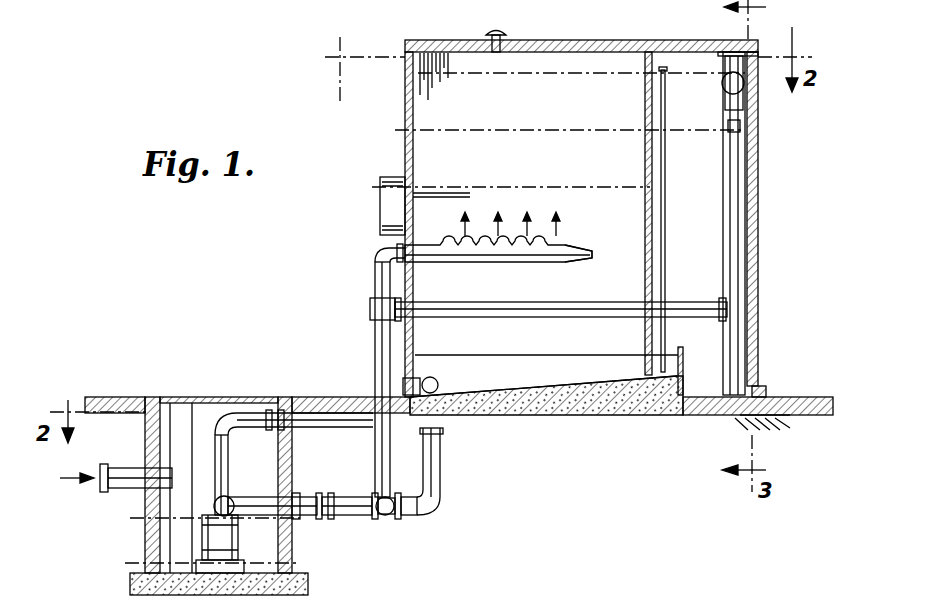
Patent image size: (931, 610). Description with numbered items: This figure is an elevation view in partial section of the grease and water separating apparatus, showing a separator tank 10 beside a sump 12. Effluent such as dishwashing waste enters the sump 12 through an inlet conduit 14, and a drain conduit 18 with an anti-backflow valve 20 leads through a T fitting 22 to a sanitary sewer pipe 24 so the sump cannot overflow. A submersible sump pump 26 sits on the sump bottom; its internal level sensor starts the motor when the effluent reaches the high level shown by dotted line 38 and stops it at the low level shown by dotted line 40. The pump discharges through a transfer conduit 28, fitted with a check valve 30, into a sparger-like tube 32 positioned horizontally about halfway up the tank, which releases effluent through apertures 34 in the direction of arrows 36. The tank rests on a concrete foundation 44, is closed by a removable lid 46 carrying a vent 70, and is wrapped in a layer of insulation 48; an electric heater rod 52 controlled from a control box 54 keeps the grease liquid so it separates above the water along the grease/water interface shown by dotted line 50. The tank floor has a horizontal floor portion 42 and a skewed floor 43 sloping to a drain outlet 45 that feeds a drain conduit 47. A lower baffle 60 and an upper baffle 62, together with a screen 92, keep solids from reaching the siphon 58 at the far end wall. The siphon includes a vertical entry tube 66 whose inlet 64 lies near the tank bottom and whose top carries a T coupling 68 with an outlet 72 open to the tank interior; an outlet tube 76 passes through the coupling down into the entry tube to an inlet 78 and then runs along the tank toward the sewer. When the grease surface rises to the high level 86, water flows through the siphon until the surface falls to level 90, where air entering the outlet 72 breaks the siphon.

The separator tank 10 is at (618, 198).
The sump 12 is at (300, 556).
The inlet conduit 14 is at (147, 468).
The drain conduit 18 is at (258, 497).
The anti-backflow valve 20 is at (319, 512).
The T fitting 22 is at (394, 490).
The sanitary sewer pipe 24 is at (389, 516).
The submersible sump pump 26 is at (205, 545).
The transfer conduit 28 is at (216, 447).
The check valve 30 is at (278, 410).
The sparger-like tube 32 is at (500, 262).
The apertures 34 is at (572, 262).
The arrows 36 is at (527, 240).
The high level dotted line 38 is at (190, 518).
The low level dotted line 40 is at (125, 563).
The horizontal floor portion 42 is at (700, 400).
The skewed floor 43 is at (547, 380).
The concrete foundation 44 is at (643, 410).
The drain outlet 45 is at (445, 390).
The removable top or lid 46 is at (590, 42).
The drain conduit 47 is at (443, 470).
The layer of insulation 48 is at (690, 52).
The grease/water interface dotted line 50 is at (418, 187).
The electric heater rod 52 is at (413, 195).
The control box 54 is at (380, 228).
The siphon 58 is at (714, 101).
The lower baffle 60 is at (695, 335).
The upper baffle 62 is at (655, 250).
The inlet 64 is at (766, 392).
The entry tube 66 is at (746, 334).
The T coupling 68 is at (748, 70).
The vent 70 is at (499, 30).
The outlet 72 is at (754, 44).
The outlet tube 76 is at (600, 317).
The inlet 78 is at (748, 125).
The high level 86 is at (452, 75).
The level 90 is at (415, 130).
The screen 92 is at (645, 220).